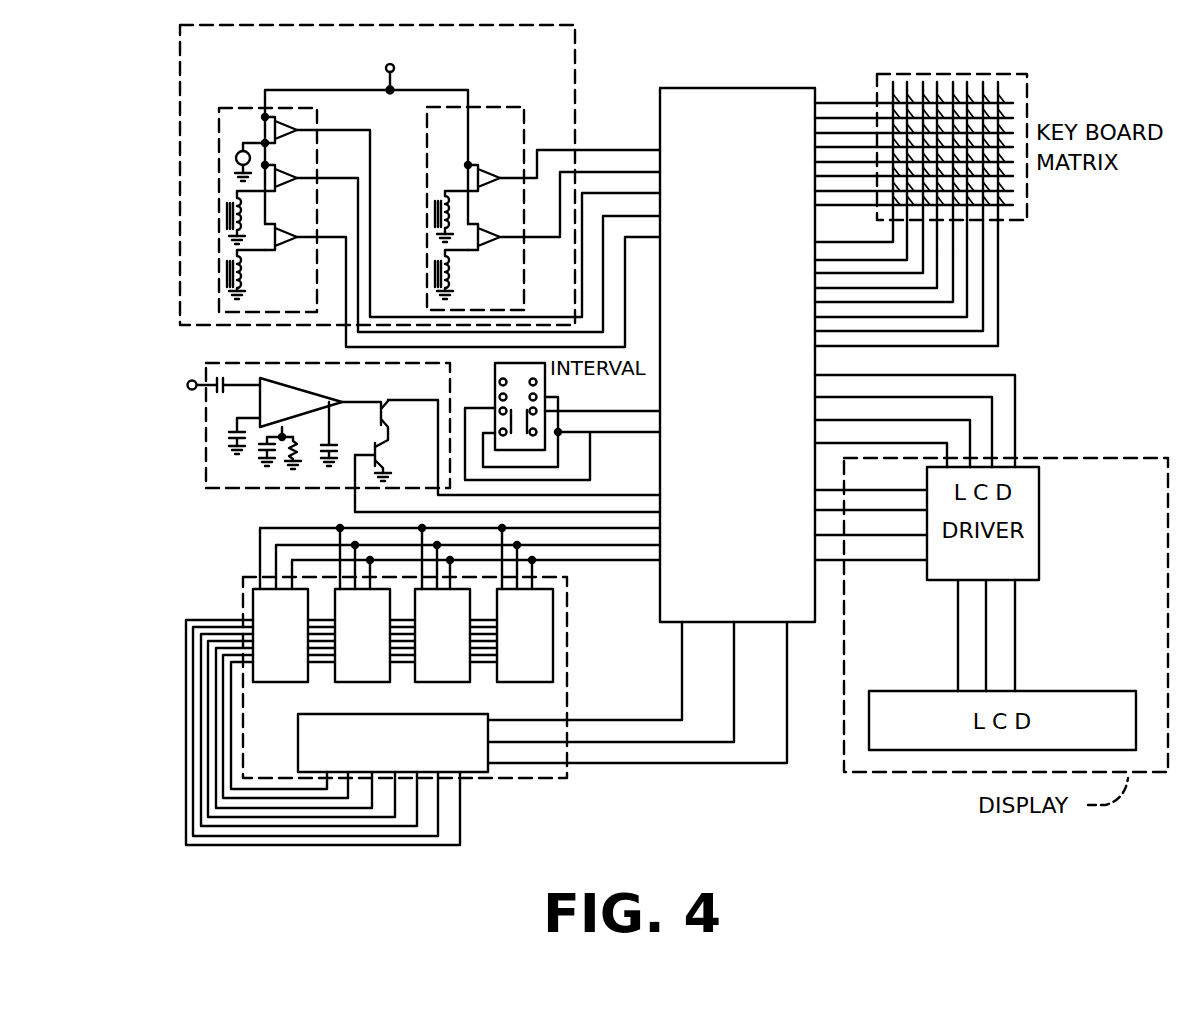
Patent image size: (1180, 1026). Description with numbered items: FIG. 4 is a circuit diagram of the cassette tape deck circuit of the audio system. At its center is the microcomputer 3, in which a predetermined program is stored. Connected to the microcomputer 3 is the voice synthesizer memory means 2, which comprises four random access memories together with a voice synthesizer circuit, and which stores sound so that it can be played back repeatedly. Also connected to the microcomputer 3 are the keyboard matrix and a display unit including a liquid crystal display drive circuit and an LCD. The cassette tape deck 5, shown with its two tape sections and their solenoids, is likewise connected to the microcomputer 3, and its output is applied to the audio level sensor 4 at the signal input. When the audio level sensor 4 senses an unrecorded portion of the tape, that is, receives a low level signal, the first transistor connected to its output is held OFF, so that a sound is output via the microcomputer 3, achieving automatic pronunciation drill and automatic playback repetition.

The voice synthesizer memory means 2 is at (568, 706).
The microcomputer 3 is at (725, 546).
The audio level sensor 4 is at (206, 489).
The cassette tape deck 5 is at (178, 80).